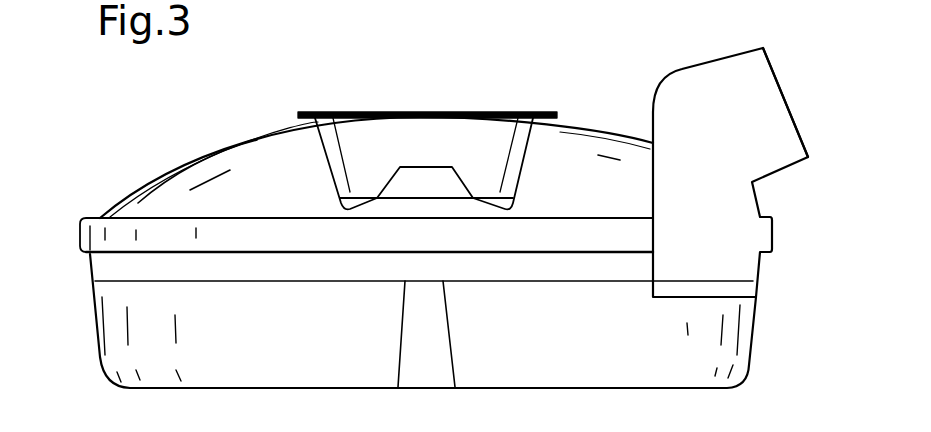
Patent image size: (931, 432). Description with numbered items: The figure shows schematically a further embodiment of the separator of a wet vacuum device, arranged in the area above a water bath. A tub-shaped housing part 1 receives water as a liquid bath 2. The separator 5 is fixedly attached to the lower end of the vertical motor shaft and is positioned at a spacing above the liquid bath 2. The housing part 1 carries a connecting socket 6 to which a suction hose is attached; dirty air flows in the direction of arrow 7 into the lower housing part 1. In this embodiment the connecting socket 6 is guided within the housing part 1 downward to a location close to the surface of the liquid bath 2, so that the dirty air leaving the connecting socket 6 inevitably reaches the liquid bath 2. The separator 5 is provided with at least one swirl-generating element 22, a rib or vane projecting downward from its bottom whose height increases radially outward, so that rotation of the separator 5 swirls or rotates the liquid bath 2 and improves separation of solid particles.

The housing part 1 is at (80, 239).
The liquid bath 2 is at (112, 318).
The separator 5 is at (373, 123).
The connecting socket 6 is at (708, 73).
The arrow 7 is at (760, 105).
The swirl-generating element 22 is at (340, 200).